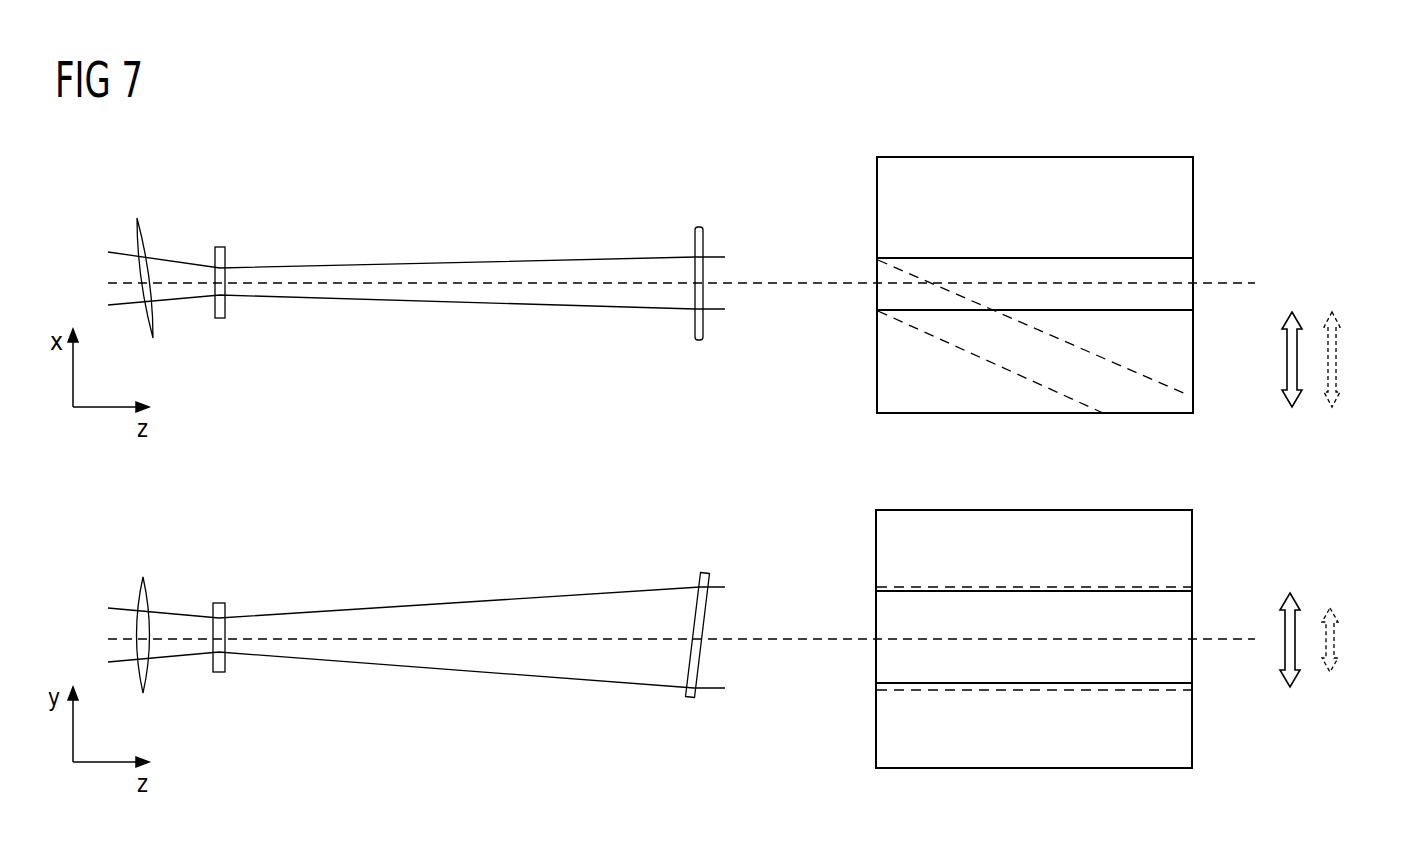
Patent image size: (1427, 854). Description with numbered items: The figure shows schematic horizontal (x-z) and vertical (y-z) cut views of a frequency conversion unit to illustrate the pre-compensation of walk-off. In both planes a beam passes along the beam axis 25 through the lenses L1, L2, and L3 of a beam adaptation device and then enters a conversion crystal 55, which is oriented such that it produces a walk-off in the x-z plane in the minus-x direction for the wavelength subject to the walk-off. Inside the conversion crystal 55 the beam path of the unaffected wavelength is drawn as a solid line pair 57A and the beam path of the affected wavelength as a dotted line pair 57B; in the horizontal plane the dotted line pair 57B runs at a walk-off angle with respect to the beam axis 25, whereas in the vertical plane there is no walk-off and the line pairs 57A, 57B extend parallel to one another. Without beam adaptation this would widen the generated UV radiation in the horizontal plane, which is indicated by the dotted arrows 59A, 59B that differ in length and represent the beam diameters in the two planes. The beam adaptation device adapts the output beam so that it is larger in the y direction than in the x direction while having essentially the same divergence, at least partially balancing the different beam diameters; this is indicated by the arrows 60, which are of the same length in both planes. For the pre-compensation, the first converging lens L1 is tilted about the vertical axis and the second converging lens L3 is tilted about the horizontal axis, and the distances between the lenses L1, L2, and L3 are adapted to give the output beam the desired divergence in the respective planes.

The first converging lens L1 is at (137, 215).
The lens L2 is at (218, 245).
The second converging lens L3 is at (698, 226).
The beam axis 25 is at (798, 280).
The conversion crystal 55 is at (1057, 156).
The solid line pair 57A is at (1123, 257).
The dotted line pair 57B is at (950, 345).
The arrows 60 is at (1287, 358).
The dotted arrow 59A is at (1340, 358).
The dotted arrow 59B is at (1337, 645).